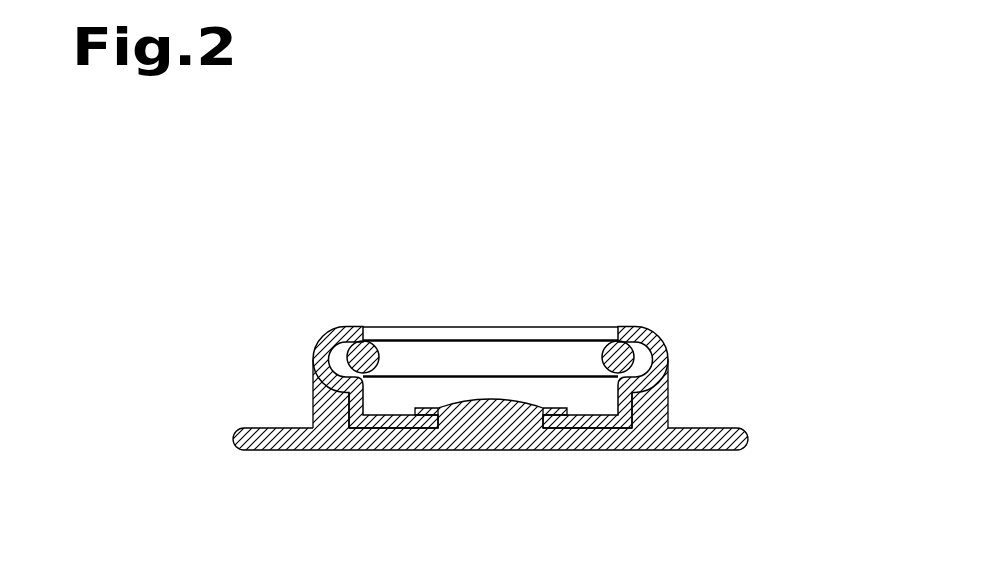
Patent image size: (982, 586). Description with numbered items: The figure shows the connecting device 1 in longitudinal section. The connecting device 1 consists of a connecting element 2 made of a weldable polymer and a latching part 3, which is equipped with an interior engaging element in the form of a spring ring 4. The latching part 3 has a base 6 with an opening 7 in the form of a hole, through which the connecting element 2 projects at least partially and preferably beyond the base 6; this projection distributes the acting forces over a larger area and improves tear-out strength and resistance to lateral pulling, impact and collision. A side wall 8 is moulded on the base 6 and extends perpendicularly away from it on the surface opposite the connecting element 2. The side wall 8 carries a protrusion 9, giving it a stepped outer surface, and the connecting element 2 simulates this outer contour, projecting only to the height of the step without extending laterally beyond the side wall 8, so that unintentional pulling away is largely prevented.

The connecting device 1 is at (780, 180).
The connecting element 2 is at (275, 450).
The latching part 3 is at (503, 370).
The spring ring 4 is at (378, 327).
The base 6 is at (421, 428).
The opening 7 is at (497, 418).
The side wall 8 is at (660, 393).
The protrusion 9 is at (670, 352).